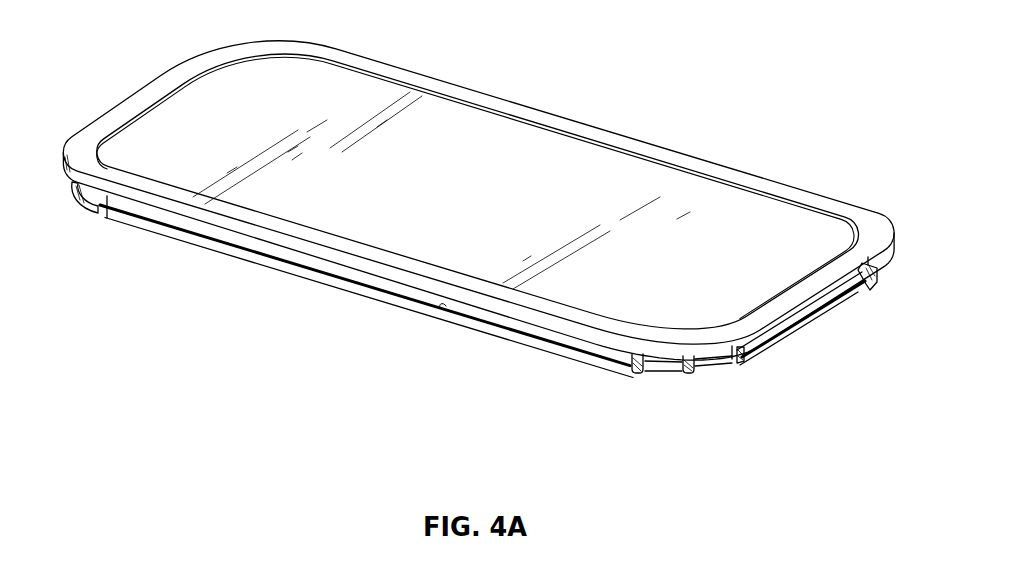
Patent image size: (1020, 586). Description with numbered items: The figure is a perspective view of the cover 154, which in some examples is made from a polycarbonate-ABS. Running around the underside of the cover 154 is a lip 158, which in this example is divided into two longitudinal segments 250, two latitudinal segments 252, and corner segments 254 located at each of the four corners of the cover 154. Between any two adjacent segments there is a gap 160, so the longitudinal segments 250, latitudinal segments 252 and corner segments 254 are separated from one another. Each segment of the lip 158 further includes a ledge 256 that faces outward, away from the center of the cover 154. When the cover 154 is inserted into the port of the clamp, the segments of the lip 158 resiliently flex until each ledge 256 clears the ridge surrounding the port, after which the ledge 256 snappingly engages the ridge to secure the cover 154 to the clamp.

The cover 154 is at (190, 39).
The lip 158 is at (137, 229).
The gap 160 is at (637, 373).
The longitudinal segment 250 is at (853, 300).
The latitudinal segment 252 is at (210, 247).
The corner segment 254 is at (668, 373).
The ledge 256 is at (439, 309).